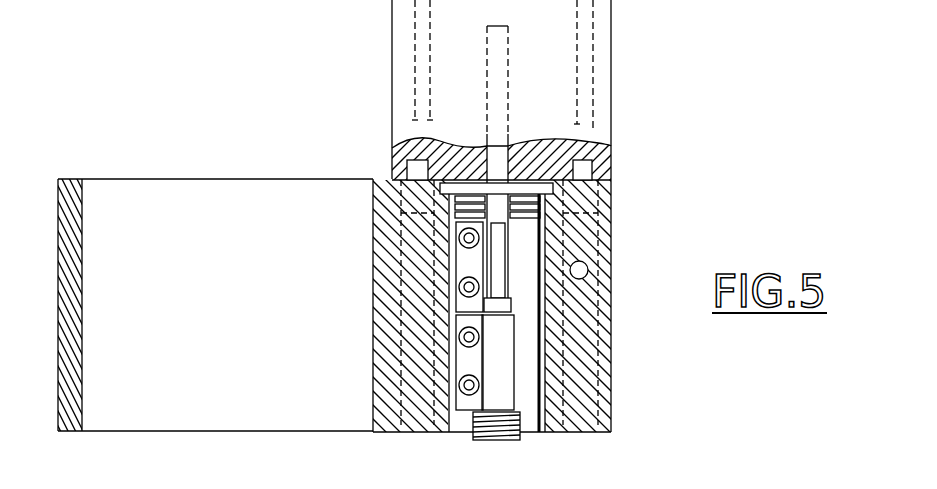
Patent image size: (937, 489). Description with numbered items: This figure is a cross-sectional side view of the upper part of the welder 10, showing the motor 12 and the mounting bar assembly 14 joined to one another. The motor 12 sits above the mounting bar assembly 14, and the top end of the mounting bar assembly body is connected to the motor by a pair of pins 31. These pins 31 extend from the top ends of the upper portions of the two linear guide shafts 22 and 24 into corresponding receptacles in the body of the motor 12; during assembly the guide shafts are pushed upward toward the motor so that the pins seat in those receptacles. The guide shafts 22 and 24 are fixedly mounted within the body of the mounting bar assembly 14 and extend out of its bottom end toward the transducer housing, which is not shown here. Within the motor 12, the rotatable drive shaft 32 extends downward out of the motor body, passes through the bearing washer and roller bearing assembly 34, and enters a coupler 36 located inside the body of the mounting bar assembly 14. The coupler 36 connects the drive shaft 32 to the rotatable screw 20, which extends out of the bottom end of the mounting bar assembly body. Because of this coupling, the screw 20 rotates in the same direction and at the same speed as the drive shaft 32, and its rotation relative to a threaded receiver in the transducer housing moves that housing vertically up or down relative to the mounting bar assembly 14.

The welder 10 is at (273, 57).
The motor 12 is at (631, 66).
The mounting bar assembly 14 is at (627, 258).
The screw 20 is at (492, 436).
The linear guide shaft 22 is at (605, 362).
The linear guide shaft 24 is at (392, 412).
The pins 31 is at (390, 168).
The drive shaft 32 is at (512, 65).
The bearing washer and roller bearing assembly 34 is at (535, 183).
The coupler 36 is at (452, 368).